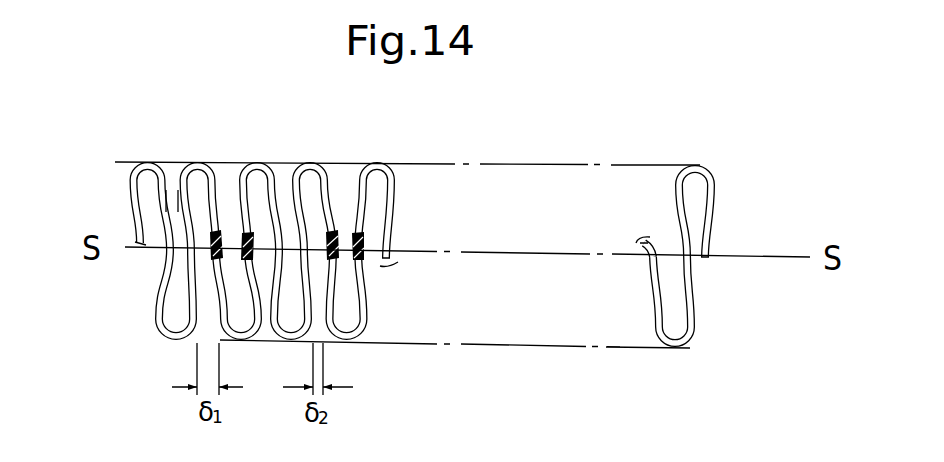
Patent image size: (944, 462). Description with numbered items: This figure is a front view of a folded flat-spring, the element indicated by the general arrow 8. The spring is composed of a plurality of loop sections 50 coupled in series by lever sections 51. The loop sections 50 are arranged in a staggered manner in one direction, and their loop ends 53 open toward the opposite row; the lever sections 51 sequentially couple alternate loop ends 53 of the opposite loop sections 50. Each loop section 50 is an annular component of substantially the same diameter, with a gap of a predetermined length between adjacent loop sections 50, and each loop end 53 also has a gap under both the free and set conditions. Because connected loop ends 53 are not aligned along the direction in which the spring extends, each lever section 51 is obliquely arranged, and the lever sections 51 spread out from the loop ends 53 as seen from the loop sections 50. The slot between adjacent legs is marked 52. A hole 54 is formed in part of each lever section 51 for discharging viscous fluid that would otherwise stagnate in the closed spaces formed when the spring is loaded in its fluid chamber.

The corrugated strip element 8 is at (439, 221).
The loop section 50 is at (141, 161).
The lever section 51 is at (164, 272).
The slot between legs 52 is at (173, 213).
The loop end 53 is at (381, 208).
The hole 54 is at (246, 234).